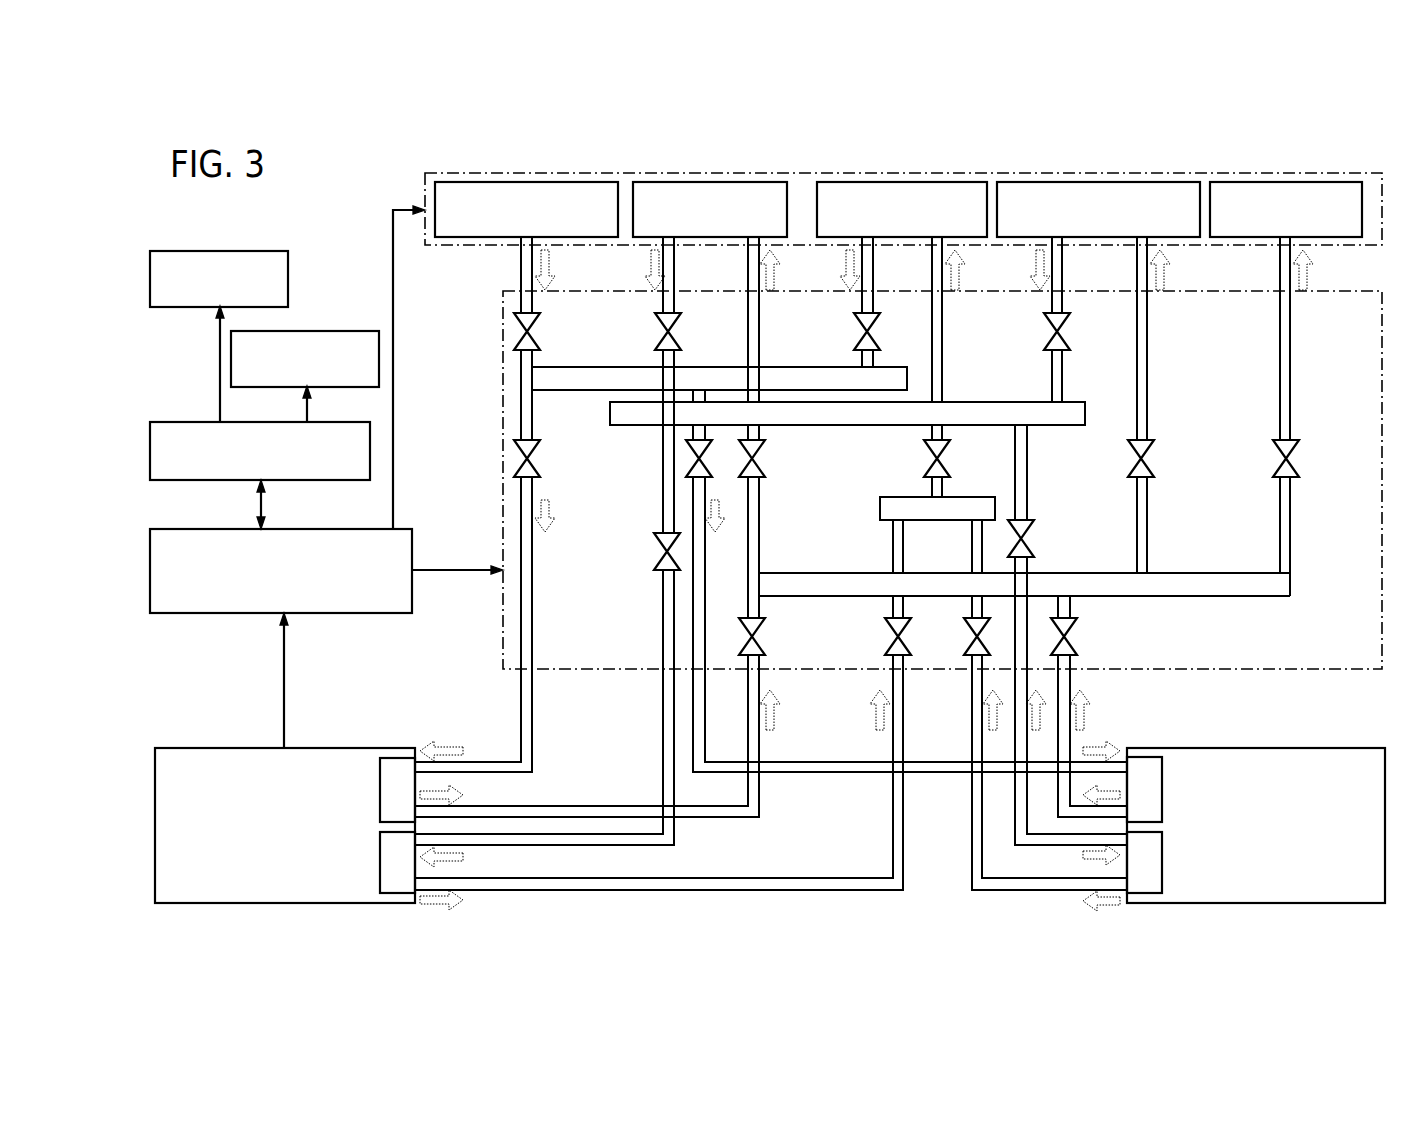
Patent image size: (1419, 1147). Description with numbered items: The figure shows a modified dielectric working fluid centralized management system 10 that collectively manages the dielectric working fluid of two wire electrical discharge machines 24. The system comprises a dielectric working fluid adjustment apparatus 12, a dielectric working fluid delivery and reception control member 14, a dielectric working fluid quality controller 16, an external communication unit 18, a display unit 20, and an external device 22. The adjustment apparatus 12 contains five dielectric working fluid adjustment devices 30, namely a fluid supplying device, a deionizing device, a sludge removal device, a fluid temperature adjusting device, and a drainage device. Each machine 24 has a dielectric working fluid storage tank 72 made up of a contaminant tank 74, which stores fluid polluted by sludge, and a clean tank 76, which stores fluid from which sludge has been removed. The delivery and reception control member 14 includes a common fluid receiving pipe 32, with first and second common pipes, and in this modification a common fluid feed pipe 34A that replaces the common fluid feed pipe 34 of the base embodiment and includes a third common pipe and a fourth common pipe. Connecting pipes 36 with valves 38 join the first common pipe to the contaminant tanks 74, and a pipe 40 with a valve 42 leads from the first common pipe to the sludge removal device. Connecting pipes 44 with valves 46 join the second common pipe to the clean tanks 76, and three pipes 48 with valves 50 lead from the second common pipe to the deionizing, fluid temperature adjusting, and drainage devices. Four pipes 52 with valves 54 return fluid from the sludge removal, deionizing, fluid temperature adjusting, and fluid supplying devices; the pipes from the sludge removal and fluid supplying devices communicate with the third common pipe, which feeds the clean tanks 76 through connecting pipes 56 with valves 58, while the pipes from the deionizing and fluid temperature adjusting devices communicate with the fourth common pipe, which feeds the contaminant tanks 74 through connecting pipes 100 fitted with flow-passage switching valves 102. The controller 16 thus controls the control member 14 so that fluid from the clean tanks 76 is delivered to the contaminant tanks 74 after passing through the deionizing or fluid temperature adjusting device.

The dielectric working fluid centralized management system 10 is at (347, 195).
The dielectric working fluid adjustment apparatus 12 is at (450, 176).
The dielectric working fluid delivery and reception control member 14 is at (1364, 674).
The dielectric working fluid quality controller 16 is at (181, 614).
The external communication unit 18 is at (176, 421).
The display unit 20 is at (350, 330).
The external device 22 is at (274, 250).
The wire electrical discharge machine 24 is at (188, 747).
The dielectric working fluid adjustment device 30 is at (491, 180).
The common fluid receiving pipe 32 is at (880, 507).
The common fluid feed pipe 34 is at (577, 386).
The common fluid feed pipe 34A is at (547, 463).
The connecting pipe 36 is at (809, 877).
The valve 38 is at (886, 640).
The pipe 40 is at (931, 330).
The valve 42 is at (950, 452).
The connecting pipe 44 is at (758, 784).
The valve 46 is at (764, 631).
The pipe 48 is at (760, 495).
The valve 50 is at (763, 464).
The pipe 52 is at (1050, 298).
The valve 54 is at (1046, 331).
The connecting pipe 56 is at (533, 697).
The valve 58 is at (511, 468).
The dielectric working fluid storage tank 72 is at (802, 783).
The contaminant tank 74 is at (378, 850).
The clean tank 76 is at (390, 757).
The connecting pipe 100 is at (636, 634).
The valve 102 is at (1037, 530).